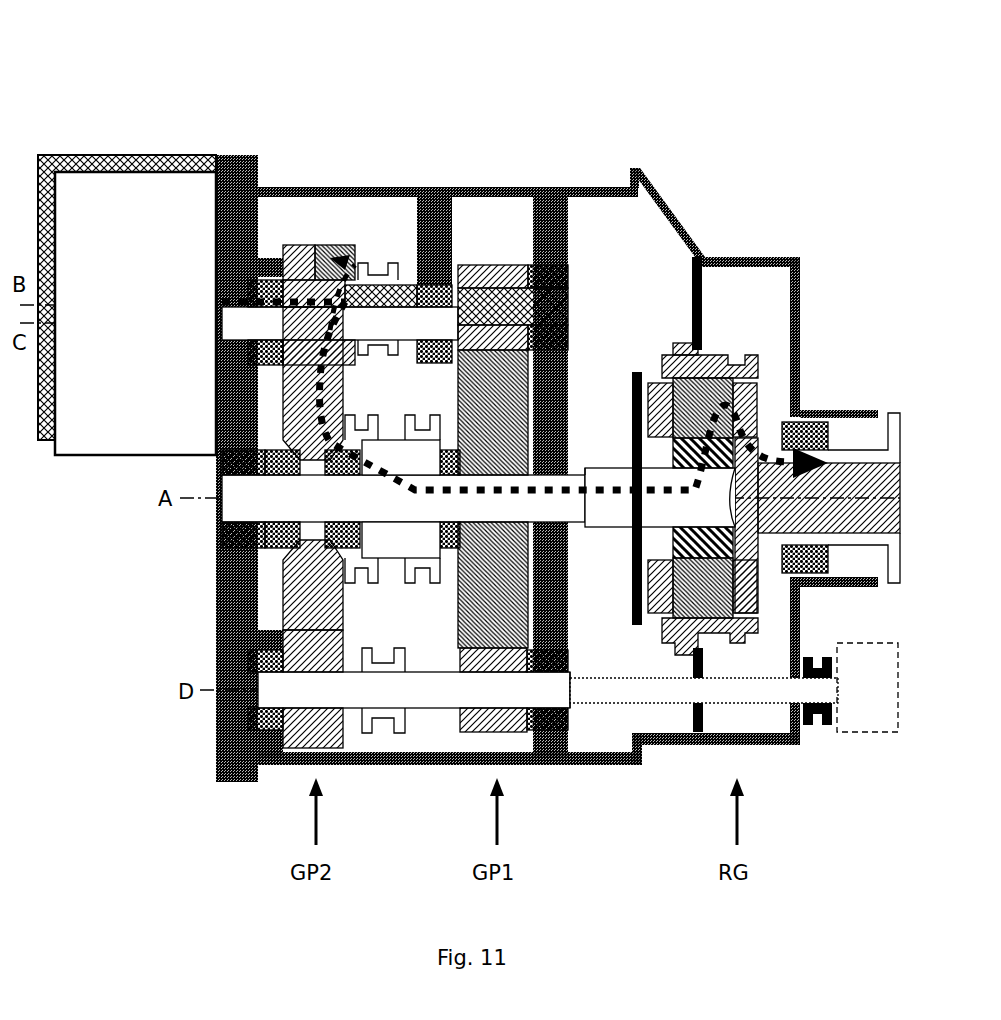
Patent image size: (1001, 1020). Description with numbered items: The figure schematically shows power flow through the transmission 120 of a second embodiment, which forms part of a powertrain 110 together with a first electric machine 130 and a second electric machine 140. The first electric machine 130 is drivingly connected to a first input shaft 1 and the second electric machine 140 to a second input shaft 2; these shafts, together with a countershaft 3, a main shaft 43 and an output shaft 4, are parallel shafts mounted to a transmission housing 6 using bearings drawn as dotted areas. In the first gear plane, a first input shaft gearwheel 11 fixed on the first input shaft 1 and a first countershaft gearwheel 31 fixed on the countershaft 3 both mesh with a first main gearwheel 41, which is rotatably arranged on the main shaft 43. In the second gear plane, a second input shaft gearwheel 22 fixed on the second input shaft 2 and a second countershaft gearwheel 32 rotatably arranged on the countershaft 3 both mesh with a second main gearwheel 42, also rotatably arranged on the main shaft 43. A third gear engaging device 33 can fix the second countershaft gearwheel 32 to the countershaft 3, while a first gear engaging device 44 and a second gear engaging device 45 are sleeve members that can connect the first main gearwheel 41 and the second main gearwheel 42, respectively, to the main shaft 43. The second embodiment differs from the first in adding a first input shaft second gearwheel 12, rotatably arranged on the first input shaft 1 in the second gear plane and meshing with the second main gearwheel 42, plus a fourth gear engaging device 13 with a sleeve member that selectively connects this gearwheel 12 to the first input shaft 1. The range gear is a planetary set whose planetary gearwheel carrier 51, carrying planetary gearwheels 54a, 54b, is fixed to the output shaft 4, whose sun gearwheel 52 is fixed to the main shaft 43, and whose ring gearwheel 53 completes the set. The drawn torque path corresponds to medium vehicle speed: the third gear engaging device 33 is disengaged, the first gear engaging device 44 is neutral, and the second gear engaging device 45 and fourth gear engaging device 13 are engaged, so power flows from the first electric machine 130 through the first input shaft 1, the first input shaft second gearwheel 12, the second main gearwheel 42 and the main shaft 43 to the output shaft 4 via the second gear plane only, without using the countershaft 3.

The powertrain 110 is at (148, 391).
The first electric machine 130 is at (82, 153).
The second electric machine 140 is at (130, 450).
The transmission 120 is at (512, 156).
The first input shaft 1 is at (410, 318).
The second input shaft 2 is at (423, 285).
The first input shaft gearwheel 11 is at (467, 265).
The first input shaft second gearwheel 12 is at (287, 243).
The fourth gear engaging device 13 is at (378, 262).
The second input shaft gearwheel 22 is at (320, 243).
The countershaft 3 is at (415, 708).
The first countershaft gearwheel 31 is at (480, 732).
The second countershaft gearwheel 32 is at (300, 748).
The third gear engaging device 33 is at (382, 733).
The output shaft 4 is at (845, 533).
The first main gearwheel 41 is at (477, 622).
The second main gearwheel 42 is at (300, 615).
The main shaft 43 is at (410, 522).
The first gear engaging device 44 is at (402, 416).
The second gear engaging device 45 is at (360, 416).
The transmission housing 6 is at (740, 257).
The planetary gearwheel carrier 51 is at (700, 378).
The sun gearwheel 52 is at (762, 442).
The ring gearwheel 53 is at (730, 345).
The planetary gearwheel 54a is at (727, 432).
The planetary gearwheel 54b is at (735, 640).